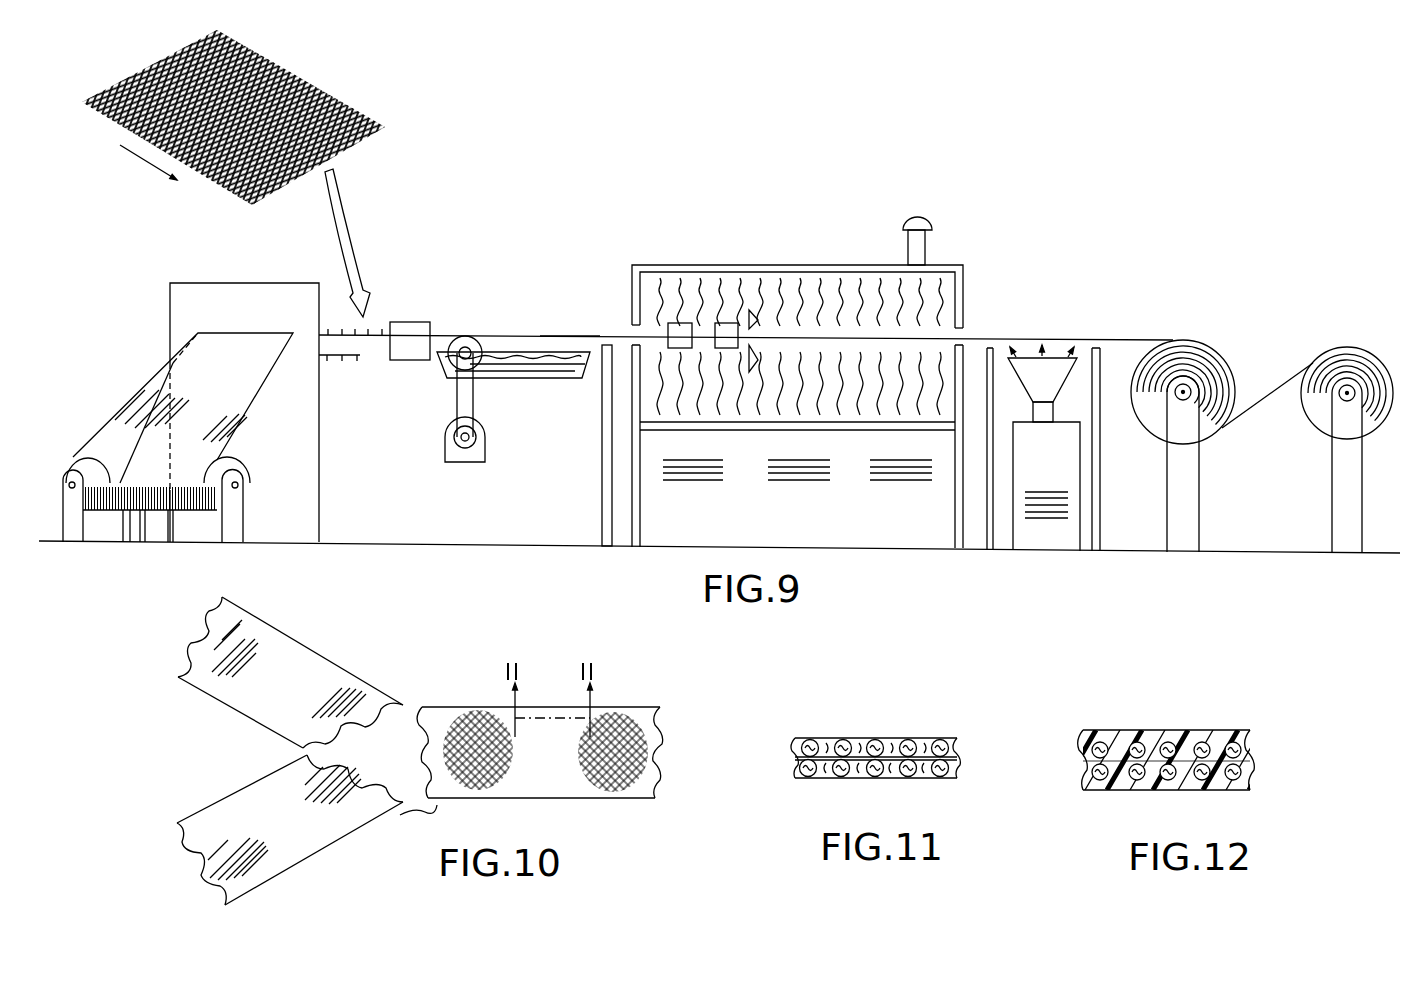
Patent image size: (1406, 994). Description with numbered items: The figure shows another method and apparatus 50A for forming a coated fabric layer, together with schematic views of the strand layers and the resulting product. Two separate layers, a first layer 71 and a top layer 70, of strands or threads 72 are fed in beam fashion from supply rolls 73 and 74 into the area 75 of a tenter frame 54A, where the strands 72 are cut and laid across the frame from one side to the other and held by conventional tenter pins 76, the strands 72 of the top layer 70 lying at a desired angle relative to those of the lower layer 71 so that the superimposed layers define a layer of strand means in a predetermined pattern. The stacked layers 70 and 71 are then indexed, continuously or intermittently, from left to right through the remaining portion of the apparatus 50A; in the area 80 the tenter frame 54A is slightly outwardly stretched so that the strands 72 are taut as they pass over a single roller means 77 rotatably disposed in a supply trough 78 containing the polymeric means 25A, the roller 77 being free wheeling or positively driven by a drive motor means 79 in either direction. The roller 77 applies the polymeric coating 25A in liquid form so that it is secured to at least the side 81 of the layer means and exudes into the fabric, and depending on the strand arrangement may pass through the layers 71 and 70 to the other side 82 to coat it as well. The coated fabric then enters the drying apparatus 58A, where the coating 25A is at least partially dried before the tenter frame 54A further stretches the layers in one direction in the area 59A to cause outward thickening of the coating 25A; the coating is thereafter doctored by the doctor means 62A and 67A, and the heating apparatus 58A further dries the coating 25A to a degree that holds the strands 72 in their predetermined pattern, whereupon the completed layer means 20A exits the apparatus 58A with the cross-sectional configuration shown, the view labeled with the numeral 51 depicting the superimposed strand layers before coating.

In FIG. 9, the method and apparatus 50A is at (632, 232).
In FIG. 9, the drying apparatus 58A is at (343, 100).
In FIG. 9, the area of the tenter frame 75 is at (208, 292).
In FIG. 9, the supply roll 73 is at (105, 462).
In FIG. 9, the supply roll 74 is at (233, 465).
In FIG. 9, the tenter pins 76 is at (345, 328).
In FIG. 9, the tenter frame 54A is at (385, 315).
In FIG. 9, the area of slight outward stretching 80 is at (408, 353).
In FIG. 9, the roller means 77 is at (477, 312).
In FIG. 9, the drive motor means 79 is at (485, 448).
In FIG. 9, the supply trough 78 is at (533, 380).
In FIG. 9, the polymeric means 25A is at (527, 355).
In FIG. 12, the polymeric means 25A is at (1157, 730).
In FIG. 9, the other side 82 is at (560, 335).
In FIG. 9, the side of the layer means 81 is at (587, 337).
In FIG. 9, the area of further stretching 59A is at (703, 330).
In FIG. 9, the doctor means 62A is at (758, 318).
In FIG. 9, the doctor means 67A is at (758, 360).
In FIG. 9, the completed layer means 20A is at (1113, 340).
In FIG. 12, the completed layer means 20A is at (1268, 745).
In FIG. 10, the top layer 70 is at (323, 672).
In FIG. 12, the top layer 70 is at (1170, 738).
In FIG. 10, the first layer 71 is at (240, 800).
In FIG. 11, the first layer 71 is at (842, 777).
In FIG. 12, the first layer 71 is at (1167, 790).
In FIG. 11, the strands or threads 72 is at (843, 742).
In FIG. 12, the strands or threads 72 is at (1138, 790).
In FIG. 11, the mesh layer 51 is at (930, 723).